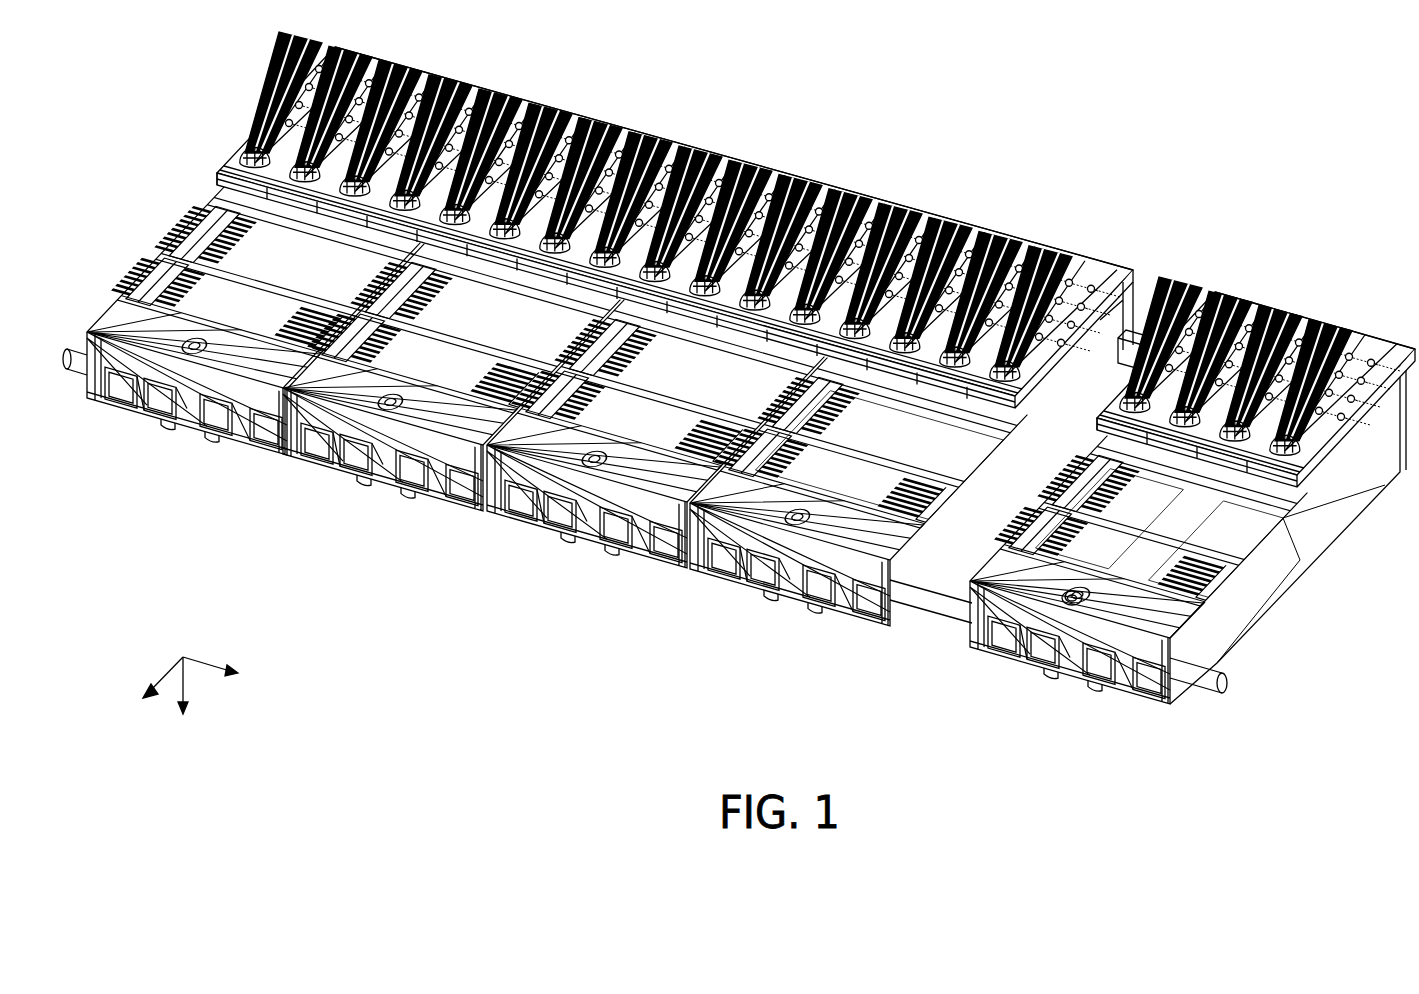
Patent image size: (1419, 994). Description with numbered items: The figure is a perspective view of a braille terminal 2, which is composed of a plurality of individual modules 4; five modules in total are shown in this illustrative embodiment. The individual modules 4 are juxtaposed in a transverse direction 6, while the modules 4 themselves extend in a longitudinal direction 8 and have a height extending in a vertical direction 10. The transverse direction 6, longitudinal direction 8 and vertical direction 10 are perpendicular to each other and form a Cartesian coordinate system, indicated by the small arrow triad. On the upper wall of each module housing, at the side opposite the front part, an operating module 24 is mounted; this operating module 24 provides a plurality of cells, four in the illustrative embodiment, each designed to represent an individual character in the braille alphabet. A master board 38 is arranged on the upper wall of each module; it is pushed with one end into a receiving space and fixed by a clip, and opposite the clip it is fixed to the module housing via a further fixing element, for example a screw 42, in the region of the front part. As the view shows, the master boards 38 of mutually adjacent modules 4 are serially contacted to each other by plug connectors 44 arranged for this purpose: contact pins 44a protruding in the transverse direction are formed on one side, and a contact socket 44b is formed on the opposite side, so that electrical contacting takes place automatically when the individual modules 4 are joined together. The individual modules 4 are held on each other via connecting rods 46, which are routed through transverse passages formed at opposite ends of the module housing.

The braille terminal 2 is at (739, 377).
The module 4 is at (576, 556).
The transverse direction 6 is at (206, 664).
The longitudinal direction 8 is at (166, 672).
The vertical direction 10 is at (192, 695).
The operating module 24 is at (1314, 344).
The master board 38 is at (902, 418).
The screw 42 is at (1070, 606).
The plug connector 44 is at (1135, 596).
The contact pins 44a is at (1210, 572).
The contact socket 44b is at (1013, 518).
The connecting rod 46 is at (1136, 358).